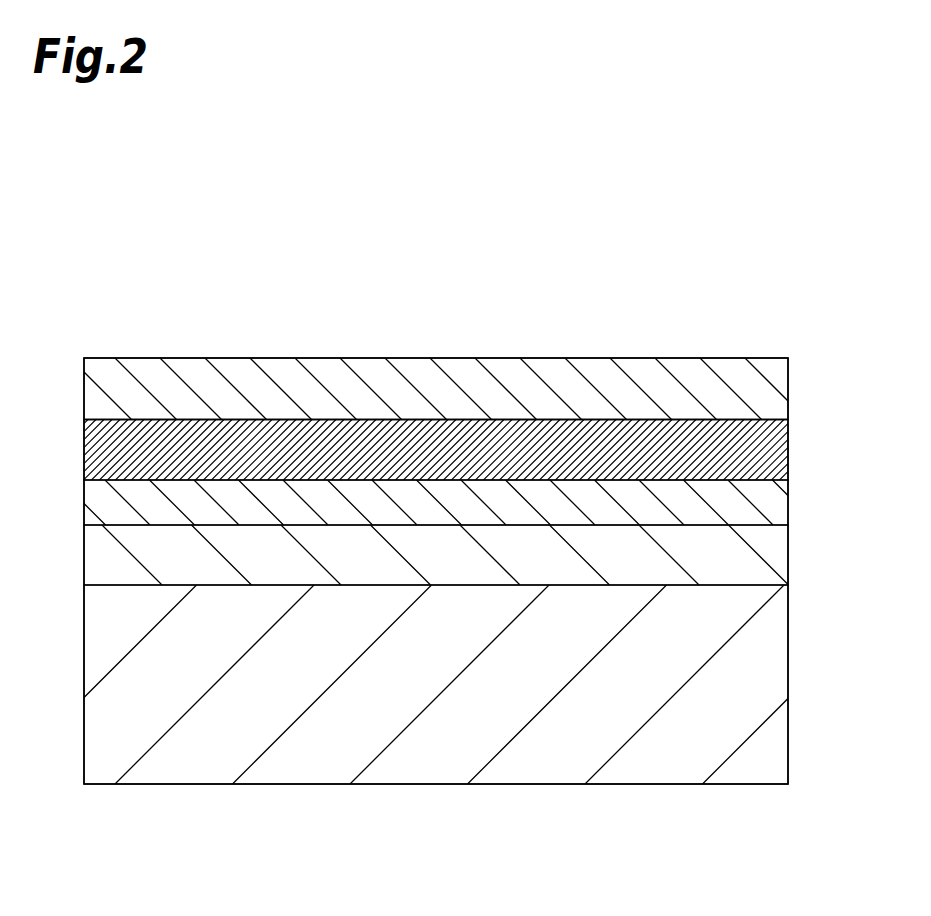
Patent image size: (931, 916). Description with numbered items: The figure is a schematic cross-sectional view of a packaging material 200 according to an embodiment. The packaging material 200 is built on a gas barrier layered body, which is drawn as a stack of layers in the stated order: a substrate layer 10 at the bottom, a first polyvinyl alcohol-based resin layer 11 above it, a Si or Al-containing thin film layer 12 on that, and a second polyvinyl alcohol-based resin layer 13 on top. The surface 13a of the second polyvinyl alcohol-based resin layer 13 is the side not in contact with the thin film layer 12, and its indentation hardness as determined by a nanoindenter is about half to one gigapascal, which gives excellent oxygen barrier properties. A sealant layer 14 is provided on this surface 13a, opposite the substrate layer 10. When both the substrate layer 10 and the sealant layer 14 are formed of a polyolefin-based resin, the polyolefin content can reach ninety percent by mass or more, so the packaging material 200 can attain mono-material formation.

The packaging material 200 is at (795, 278).
The sealant layer 14 is at (772, 382).
The second polyvinyl alcohol-based resin layer 13 is at (773, 452).
The surface of the second polyvinyl alcohol-based resin layer 13a is at (537, 420).
The Si or Al-containing thin film layer 12 is at (772, 508).
The first polyvinyl alcohol-based resin layer 11 is at (772, 560).
The substrate layer 10 is at (772, 675).